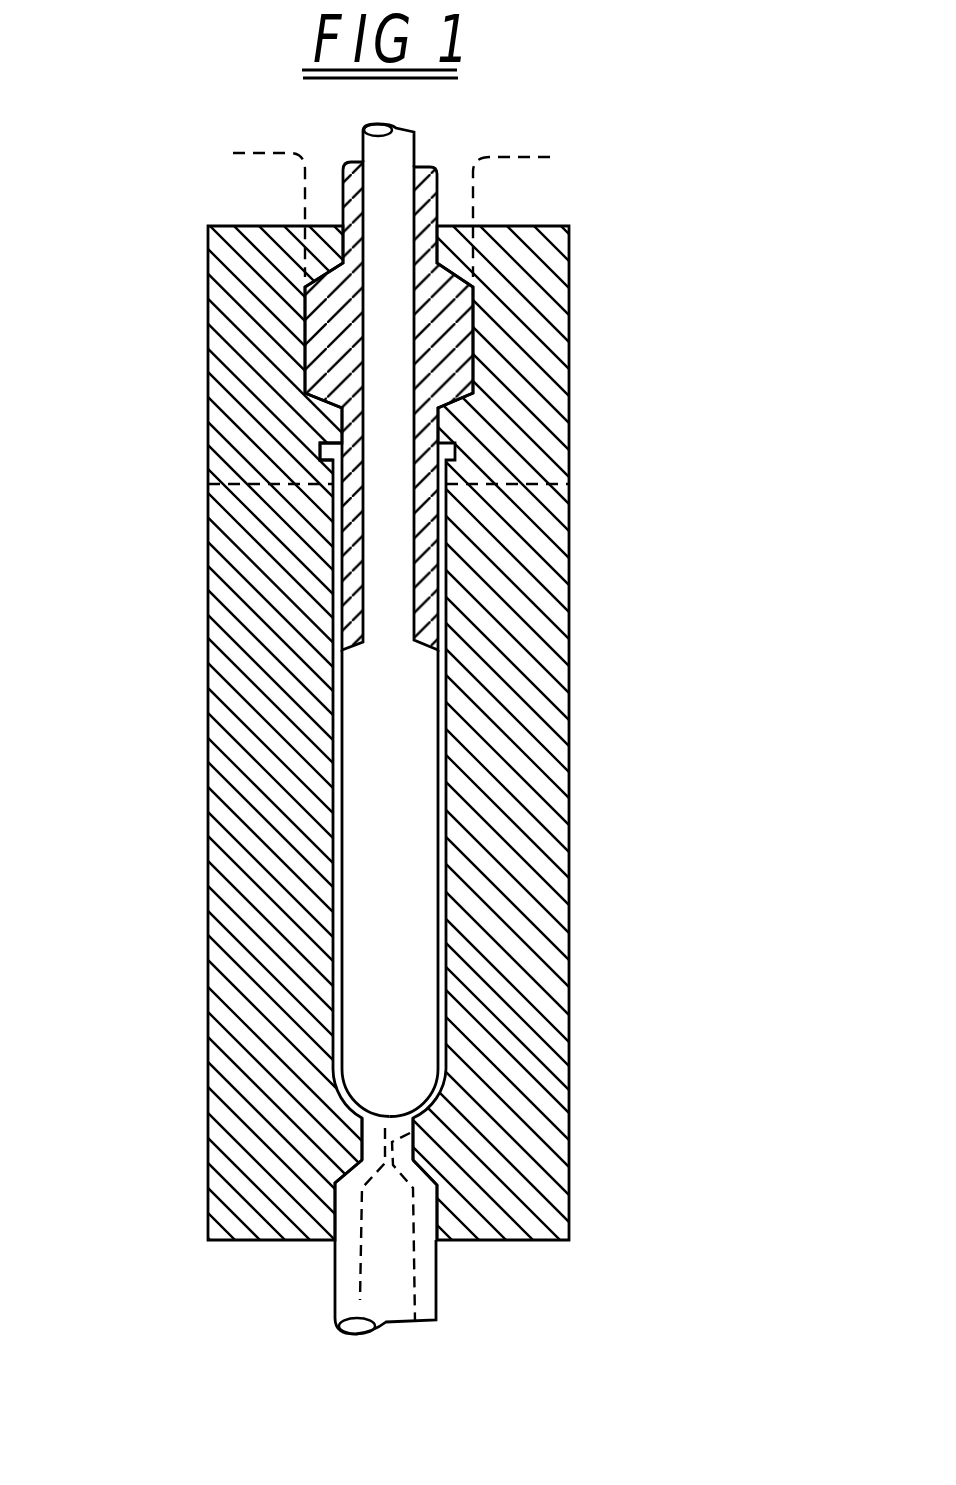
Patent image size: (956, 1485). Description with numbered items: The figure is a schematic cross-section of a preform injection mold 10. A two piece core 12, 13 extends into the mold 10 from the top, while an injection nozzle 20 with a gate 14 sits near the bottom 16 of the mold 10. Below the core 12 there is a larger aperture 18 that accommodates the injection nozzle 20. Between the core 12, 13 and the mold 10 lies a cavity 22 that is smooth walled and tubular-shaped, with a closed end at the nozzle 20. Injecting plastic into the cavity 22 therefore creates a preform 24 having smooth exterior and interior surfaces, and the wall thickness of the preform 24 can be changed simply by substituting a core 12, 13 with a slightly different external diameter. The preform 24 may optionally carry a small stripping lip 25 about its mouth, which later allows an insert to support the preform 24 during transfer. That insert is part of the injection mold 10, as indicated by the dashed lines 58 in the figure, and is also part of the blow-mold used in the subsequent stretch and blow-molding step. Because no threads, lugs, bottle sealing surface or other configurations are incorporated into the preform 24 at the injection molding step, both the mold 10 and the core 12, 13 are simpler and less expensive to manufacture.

The injection mold 10 is at (228, 627).
The core 12 is at (412, 738).
The core 13 is at (430, 532).
The gate 14 is at (412, 1131).
The bottom 16 is at (477, 1242).
The aperture 18 is at (430, 1219).
The injection nozzle 20 is at (343, 1218).
The cavity 22 is at (340, 846).
The preform 24 is at (442, 966).
The stripping lip 25 is at (337, 437).
The dashed lines 58 is at (473, 242).